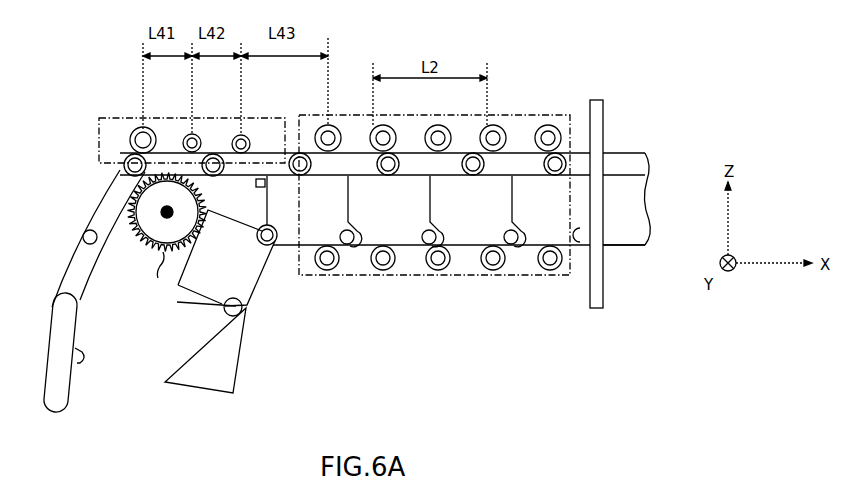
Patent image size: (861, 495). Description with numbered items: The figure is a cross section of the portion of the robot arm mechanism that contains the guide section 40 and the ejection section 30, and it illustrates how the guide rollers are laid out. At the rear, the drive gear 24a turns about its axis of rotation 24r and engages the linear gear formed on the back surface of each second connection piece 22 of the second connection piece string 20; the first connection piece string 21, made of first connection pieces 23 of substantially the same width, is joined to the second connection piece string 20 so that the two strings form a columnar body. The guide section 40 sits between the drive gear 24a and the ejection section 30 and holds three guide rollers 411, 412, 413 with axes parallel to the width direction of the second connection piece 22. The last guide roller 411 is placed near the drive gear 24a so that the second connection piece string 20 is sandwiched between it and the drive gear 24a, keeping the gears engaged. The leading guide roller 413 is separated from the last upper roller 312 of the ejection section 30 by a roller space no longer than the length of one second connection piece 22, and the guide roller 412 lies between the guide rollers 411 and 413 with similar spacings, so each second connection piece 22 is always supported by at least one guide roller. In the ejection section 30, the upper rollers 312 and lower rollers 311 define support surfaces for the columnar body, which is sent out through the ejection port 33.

The second connection piece string 20 is at (85, 378).
The first connection piece string 21 is at (253, 380).
The second connection piece 22 is at (641, 152).
The first connection piece 23 is at (629, 247).
The axis of rotation of the drive gear 24r is at (165, 212).
The drive gear 24a is at (154, 254).
The ejection section 30 is at (531, 114).
The lower rollers 311 is at (549, 276).
The upper rollers 312 is at (556, 126).
The ejection port 33 is at (598, 100).
The guide section 40 is at (110, 119).
The last guide roller 411 is at (152, 128).
The guide roller 412 is at (200, 134).
The leading guide roller 413 is at (250, 135).